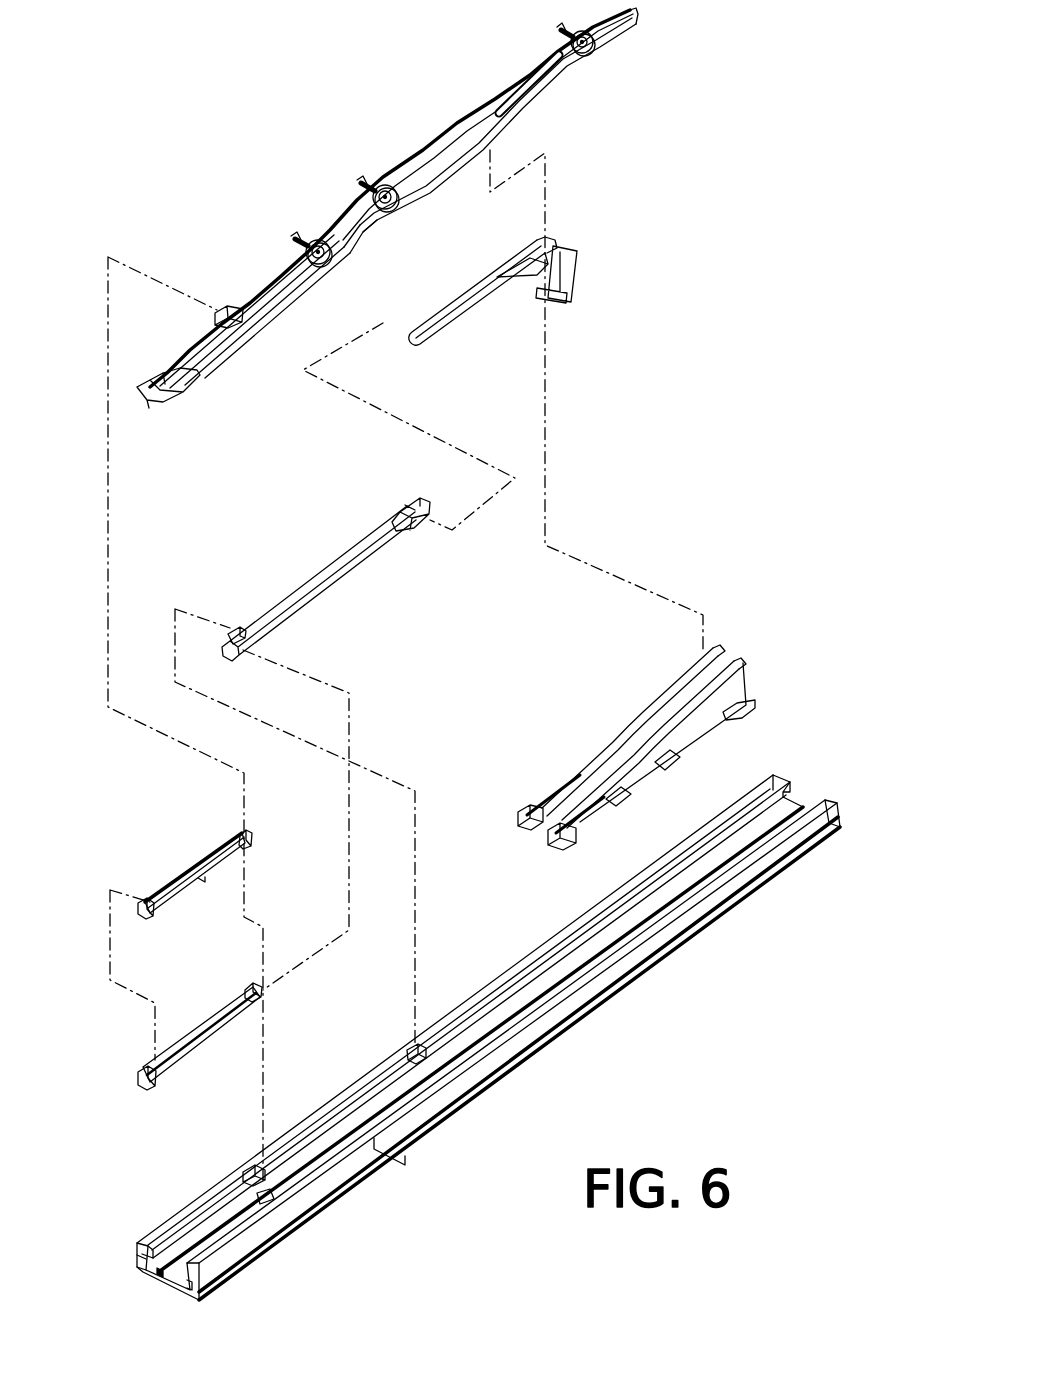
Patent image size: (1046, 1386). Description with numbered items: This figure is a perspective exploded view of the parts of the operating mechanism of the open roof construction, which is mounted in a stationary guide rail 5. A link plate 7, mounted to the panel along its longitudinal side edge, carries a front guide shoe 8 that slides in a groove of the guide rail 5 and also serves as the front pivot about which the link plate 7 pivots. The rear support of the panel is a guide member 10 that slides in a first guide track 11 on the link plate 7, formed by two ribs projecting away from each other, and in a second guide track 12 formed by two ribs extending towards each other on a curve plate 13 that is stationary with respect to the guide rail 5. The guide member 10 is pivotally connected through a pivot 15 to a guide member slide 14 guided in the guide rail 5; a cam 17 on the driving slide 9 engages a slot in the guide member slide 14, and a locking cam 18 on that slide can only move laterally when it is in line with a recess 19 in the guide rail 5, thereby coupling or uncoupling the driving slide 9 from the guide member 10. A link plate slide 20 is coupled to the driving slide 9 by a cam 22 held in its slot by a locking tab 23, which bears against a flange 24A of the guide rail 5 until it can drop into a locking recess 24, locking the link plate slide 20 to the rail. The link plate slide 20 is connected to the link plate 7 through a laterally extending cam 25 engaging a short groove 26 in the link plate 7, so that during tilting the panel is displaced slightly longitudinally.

The stationary guide rail 5 is at (489, 998).
The link plate 7 is at (387, 221).
The front guide shoe 8 is at (172, 384).
The driving slide 9 is at (244, 1048).
The guide member 10 is at (563, 272).
The first guide track 11 is at (567, 77).
The second guide track 12 is at (757, 656).
The curve plate 13 is at (690, 728).
The guide member slide 14 is at (319, 583).
The pivot 15 is at (410, 333).
The cam 17 is at (257, 990).
The locking cam 18 is at (233, 633).
The recess 19 is at (408, 1055).
The link plate slide 20 is at (158, 900).
The cam 22 is at (150, 1080).
The locking tab 23 is at (226, 866).
The locking recess 24 is at (262, 1200).
The flange 24A is at (796, 807).
The cam 25 is at (252, 838).
The short groove 26 is at (231, 306).